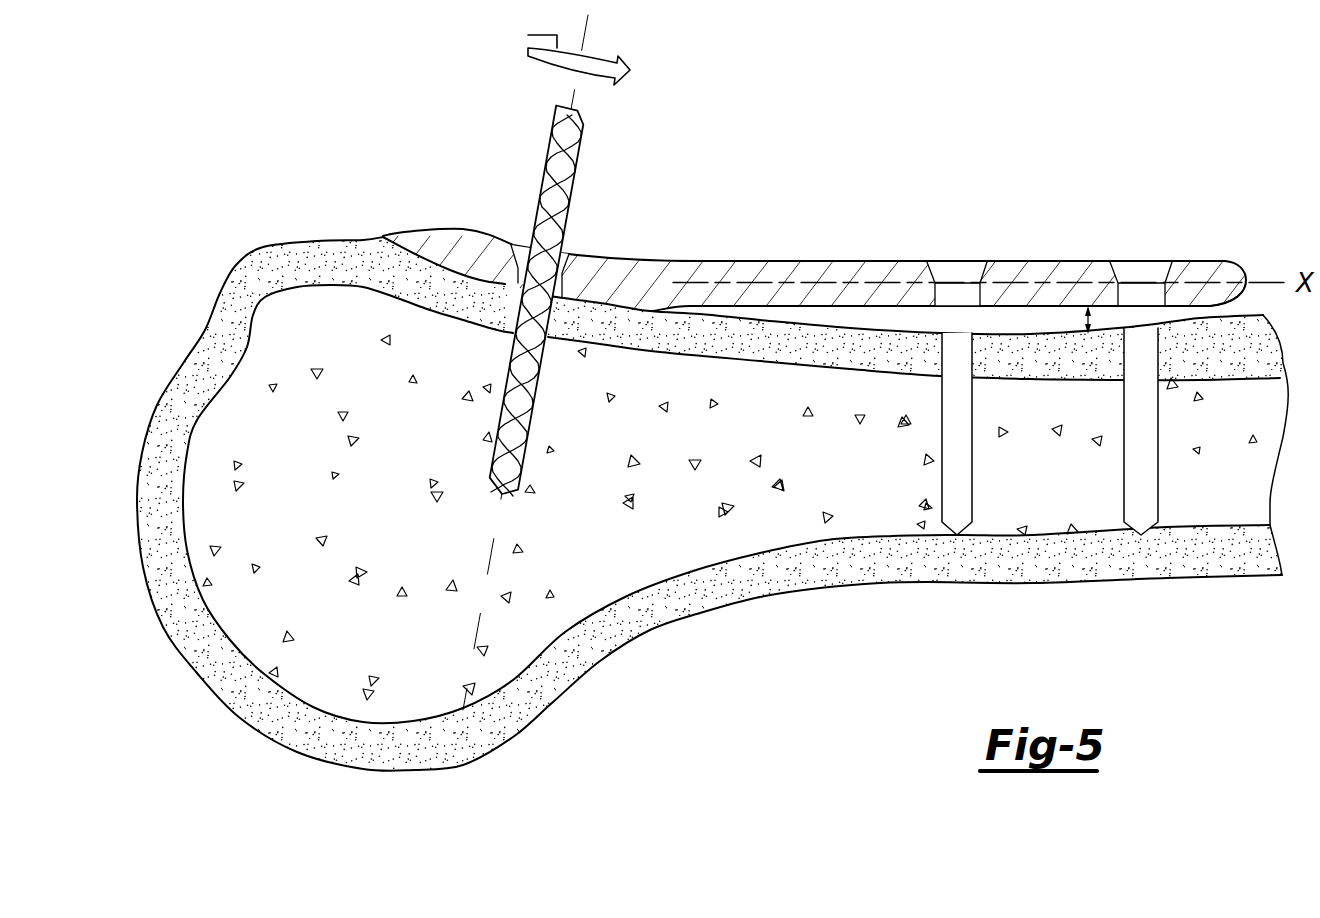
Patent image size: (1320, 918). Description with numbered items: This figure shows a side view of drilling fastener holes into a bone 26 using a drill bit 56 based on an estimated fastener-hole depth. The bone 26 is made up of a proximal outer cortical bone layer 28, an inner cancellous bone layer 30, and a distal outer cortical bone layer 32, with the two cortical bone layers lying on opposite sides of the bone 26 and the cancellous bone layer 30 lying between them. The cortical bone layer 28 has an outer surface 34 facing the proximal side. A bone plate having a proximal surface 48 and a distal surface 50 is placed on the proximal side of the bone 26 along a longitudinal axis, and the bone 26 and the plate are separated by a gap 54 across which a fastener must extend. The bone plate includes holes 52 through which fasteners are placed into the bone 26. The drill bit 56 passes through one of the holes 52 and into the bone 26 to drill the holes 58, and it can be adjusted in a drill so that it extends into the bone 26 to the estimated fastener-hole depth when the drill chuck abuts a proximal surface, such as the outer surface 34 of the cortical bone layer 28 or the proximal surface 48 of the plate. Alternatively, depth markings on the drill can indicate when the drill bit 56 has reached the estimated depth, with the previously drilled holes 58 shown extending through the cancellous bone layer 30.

The bone 26 is at (250, 244).
The proximal outer cortical bone layer 28 is at (1065, 336).
The inner cancellous bone layer 30 is at (1030, 474).
The distal outer cortical bone layer 32 is at (1031, 583).
The outer surface 34 is at (858, 262).
The proximal surface 48 is at (1217, 261).
The distal surface 50 is at (1193, 307).
The holes 52 is at (527, 247).
The gap 54 is at (1090, 318).
The drill bit 56 is at (548, 147).
The holes 58 is at (945, 457).